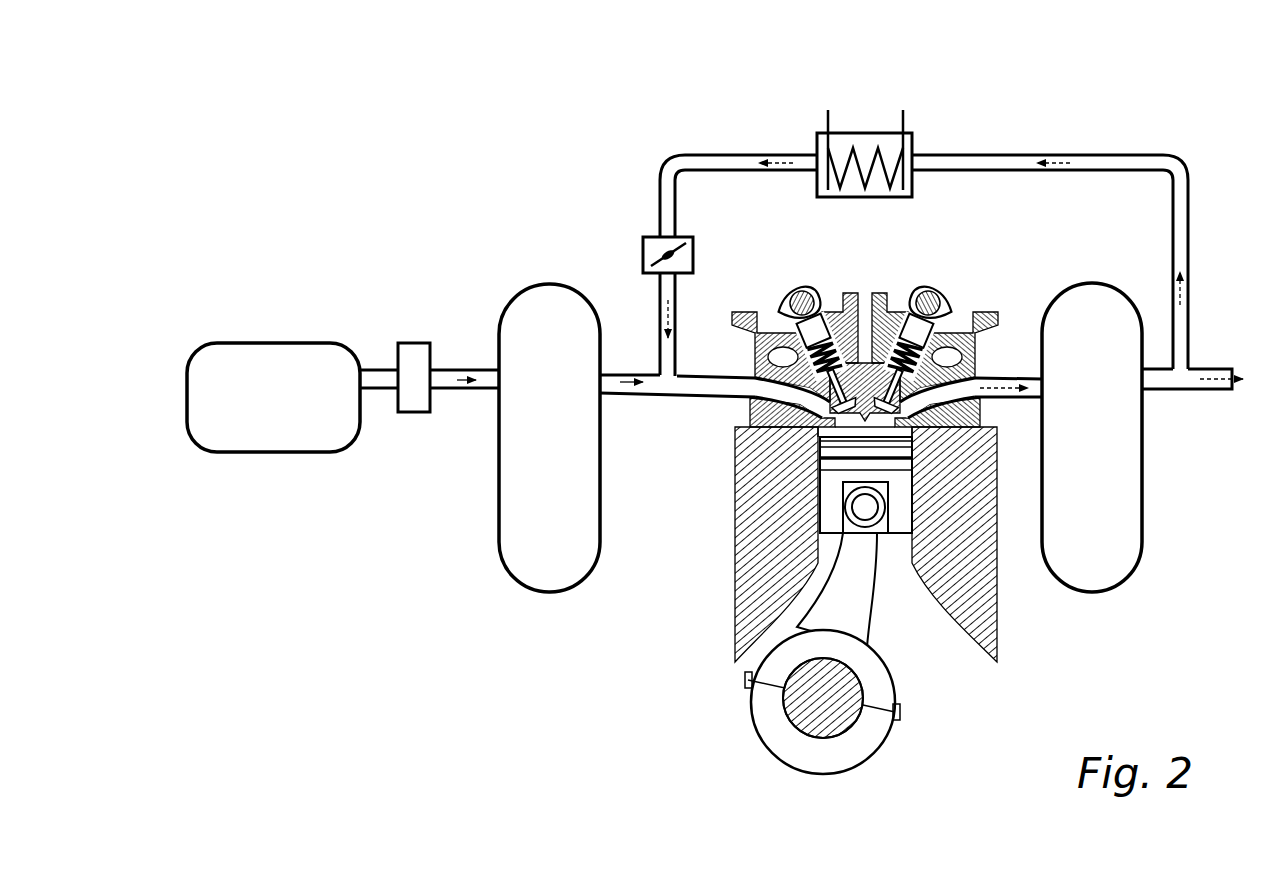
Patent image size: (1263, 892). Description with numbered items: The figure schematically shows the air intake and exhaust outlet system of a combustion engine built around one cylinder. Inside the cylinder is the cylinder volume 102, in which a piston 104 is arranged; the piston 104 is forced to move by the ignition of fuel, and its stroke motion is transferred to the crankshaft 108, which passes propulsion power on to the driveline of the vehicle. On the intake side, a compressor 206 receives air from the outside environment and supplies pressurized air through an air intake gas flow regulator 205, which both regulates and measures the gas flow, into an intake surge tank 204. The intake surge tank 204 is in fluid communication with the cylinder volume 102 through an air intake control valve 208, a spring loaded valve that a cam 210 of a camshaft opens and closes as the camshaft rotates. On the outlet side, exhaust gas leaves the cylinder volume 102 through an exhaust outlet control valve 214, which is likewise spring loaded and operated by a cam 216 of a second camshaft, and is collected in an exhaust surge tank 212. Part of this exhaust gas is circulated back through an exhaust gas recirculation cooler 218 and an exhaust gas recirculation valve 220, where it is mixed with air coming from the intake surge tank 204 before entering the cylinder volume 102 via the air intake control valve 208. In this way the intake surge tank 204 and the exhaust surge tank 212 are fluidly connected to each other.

The cylinder volume 102 is at (765, 508).
The piston 104 is at (903, 503).
The crankshaft 108 is at (808, 697).
The intake surge tank 204 is at (548, 297).
The air intake gas flow regulator 205 is at (415, 343).
The compressor 206 is at (265, 370).
The air intake control valve 208 is at (870, 425).
The cam 210 is at (798, 287).
The exhaust surge tank 212 is at (1090, 583).
The exhaust outlet control valve 214 is at (927, 370).
The cam 216 is at (933, 287).
The exhaust gas recirculation cooler 218 is at (872, 133).
The exhaust gas recirculation valve 220 is at (650, 240).